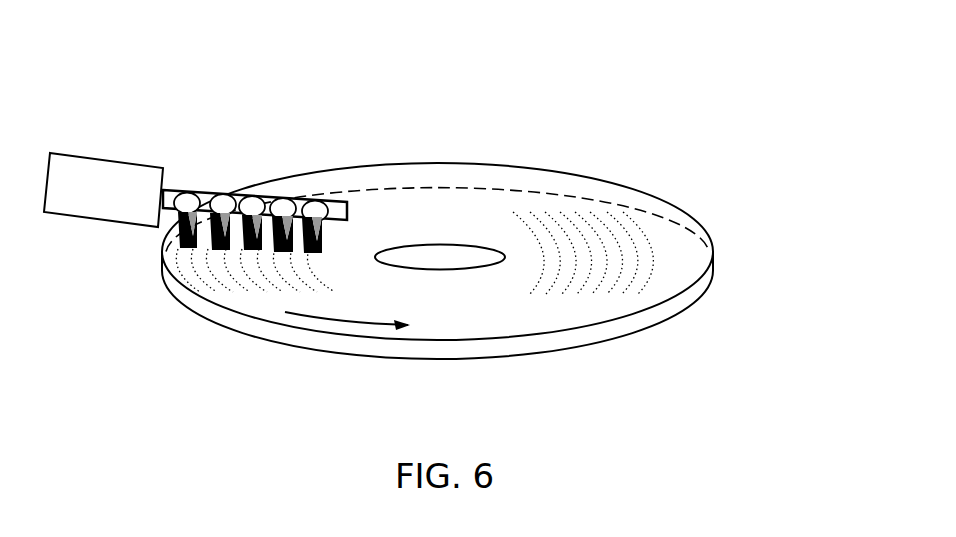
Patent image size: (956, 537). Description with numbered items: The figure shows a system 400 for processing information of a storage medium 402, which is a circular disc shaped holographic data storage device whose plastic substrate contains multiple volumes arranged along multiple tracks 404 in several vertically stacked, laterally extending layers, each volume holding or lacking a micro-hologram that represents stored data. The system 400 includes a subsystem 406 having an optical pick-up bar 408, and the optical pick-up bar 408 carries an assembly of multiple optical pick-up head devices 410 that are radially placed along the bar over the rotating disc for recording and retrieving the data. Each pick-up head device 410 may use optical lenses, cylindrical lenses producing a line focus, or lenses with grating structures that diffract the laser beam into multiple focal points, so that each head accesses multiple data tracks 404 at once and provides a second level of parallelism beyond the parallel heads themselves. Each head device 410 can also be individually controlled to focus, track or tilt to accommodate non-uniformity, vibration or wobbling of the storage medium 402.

The system 400 is at (700, 60).
The storage medium 402 is at (163, 277).
The tracks 404 is at (257, 285).
The subsystem 406 is at (140, 135).
The optical pick-up bar 408 is at (187, 174).
The optical pick-up head devices 410 is at (297, 197).